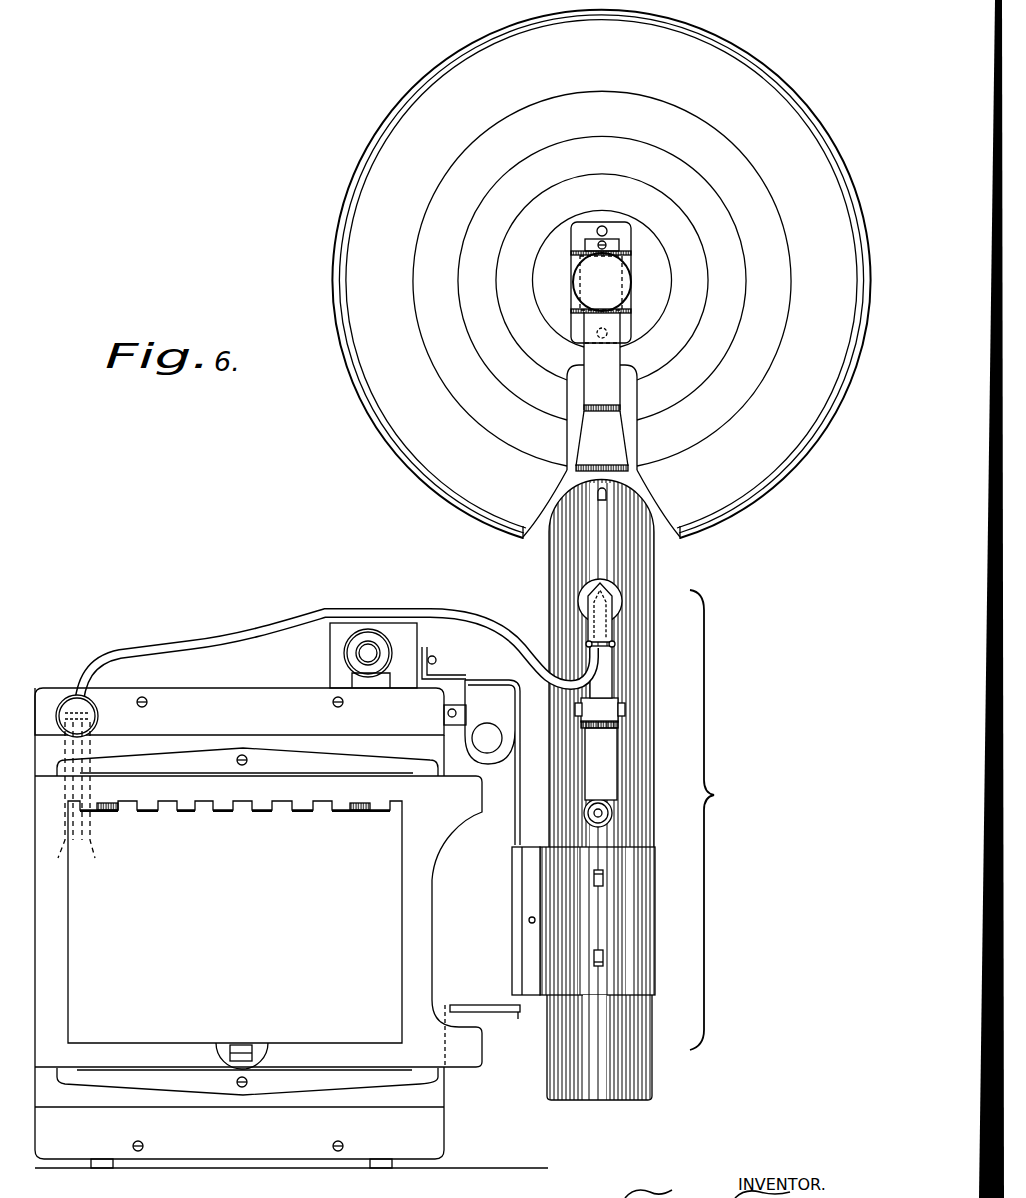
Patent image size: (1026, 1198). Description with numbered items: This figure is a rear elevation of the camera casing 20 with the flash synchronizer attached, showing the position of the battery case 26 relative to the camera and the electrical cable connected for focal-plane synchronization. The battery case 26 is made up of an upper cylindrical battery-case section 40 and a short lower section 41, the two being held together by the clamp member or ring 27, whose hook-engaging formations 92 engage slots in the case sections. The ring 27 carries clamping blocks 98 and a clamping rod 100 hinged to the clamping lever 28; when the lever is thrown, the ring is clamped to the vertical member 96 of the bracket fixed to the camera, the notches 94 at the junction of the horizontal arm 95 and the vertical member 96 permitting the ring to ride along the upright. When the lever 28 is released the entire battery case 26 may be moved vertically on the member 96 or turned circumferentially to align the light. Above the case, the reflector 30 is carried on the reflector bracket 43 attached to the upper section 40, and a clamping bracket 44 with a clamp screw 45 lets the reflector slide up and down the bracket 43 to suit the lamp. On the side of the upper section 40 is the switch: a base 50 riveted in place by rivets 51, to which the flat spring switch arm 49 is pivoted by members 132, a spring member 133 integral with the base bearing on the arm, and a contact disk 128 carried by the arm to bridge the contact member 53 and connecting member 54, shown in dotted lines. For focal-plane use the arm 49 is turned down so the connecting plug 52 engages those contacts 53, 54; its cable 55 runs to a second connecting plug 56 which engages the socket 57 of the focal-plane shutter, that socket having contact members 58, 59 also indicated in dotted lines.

The camera casing 20 is at (273, 1150).
The battery case 26 is at (720, 820).
The clamp member or ring 27 is at (641, 888).
The clamping lever 28 is at (514, 847).
The reflector 30 is at (388, 124).
The upper battery-case section 40 is at (642, 684).
The lower battery-case section 41 is at (638, 1024).
The reflector bracket 43 is at (605, 358).
The clamping bracket 44 is at (580, 325).
The clamp screw 45 is at (578, 284).
The switch arm 49 is at (605, 750).
The switch base 50 is at (614, 668).
The rivets 51 is at (586, 642).
The connecting plug 52 is at (623, 605).
The contact member 53 is at (590, 594).
The connecting member 54 is at (586, 614).
The cable 55 is at (186, 652).
The second connecting plug 56 is at (98, 718).
The socket 57 is at (68, 694).
The contact member 58 is at (98, 800).
The contact member 59 is at (57, 800).
The hook-engaging formations 92 is at (598, 886).
The notches 94 is at (517, 1027).
The horizontal arm 95 is at (487, 999).
The vertical member 96 is at (514, 829).
The clamping blocks 98 is at (520, 956).
The clamping rod 100 is at (528, 920).
The contact disk 128 is at (613, 813).
The pivot members 132 is at (622, 712).
The spring member 133 is at (603, 690).